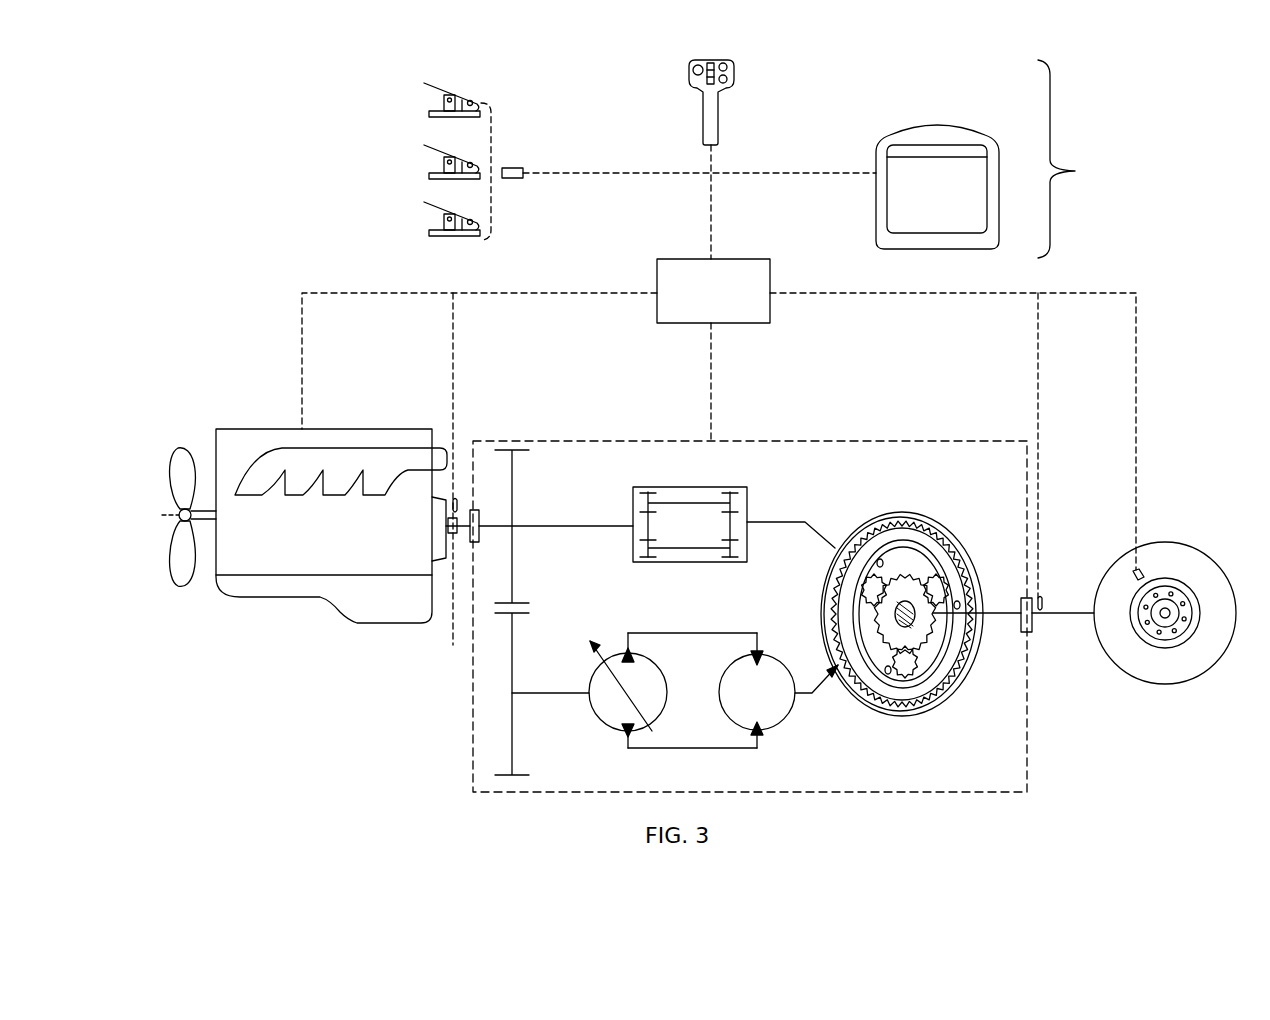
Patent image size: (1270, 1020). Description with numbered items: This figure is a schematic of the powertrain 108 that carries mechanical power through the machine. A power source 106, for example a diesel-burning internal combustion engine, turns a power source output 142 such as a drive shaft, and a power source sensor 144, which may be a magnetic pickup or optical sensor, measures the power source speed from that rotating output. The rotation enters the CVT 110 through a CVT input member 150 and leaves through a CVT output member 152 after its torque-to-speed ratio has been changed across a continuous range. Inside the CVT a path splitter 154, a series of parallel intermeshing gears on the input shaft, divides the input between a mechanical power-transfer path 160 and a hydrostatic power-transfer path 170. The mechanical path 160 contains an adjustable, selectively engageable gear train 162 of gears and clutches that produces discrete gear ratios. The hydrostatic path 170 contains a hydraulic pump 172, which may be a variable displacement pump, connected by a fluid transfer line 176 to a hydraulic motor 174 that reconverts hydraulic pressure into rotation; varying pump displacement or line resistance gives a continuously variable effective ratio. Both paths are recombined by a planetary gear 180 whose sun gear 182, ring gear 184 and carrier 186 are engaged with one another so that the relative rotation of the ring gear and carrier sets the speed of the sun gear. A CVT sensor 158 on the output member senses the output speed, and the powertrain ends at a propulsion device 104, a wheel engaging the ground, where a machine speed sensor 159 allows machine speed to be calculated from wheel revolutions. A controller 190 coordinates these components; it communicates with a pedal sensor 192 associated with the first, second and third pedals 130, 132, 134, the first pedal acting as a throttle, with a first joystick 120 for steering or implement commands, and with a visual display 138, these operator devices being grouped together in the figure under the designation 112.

The propulsion device 104 is at (1165, 670).
The power source 106 is at (268, 428).
The powertrain 108 is at (545, 412).
The CVT 110 is at (641, 441).
The operator interface 112 is at (1081, 159).
The first joystick 120 is at (718, 112).
The first pedal 130 is at (430, 113).
The second pedal 132 is at (430, 175).
The third pedal 134 is at (430, 232).
The visual display 138 is at (935, 130).
The power source output 142 is at (455, 535).
The power source sensor 144 is at (456, 500).
The CVT input member 150 is at (481, 540).
The CVT output member 152 is at (1032, 632).
The path splitter 154 is at (513, 488).
The CVT sensor 158 is at (1046, 598).
The machine speed sensor 159 is at (1143, 573).
The mechanical power-transfer path 160 is at (738, 507).
The gear train 162 is at (752, 502).
The hydrostatic power-transfer path 170 is at (717, 707).
The hydraulic pump 172 is at (642, 658).
The hydraulic motor 174 is at (722, 712).
The fluid transfer line 176 is at (687, 633).
The planetary gear 180 is at (919, 614).
The sun gear 182 is at (909, 587).
The ring gear 184 is at (932, 707).
The carrier 186 is at (948, 648).
The controller 190 is at (733, 302).
The pedal sensor 192 is at (509, 168).